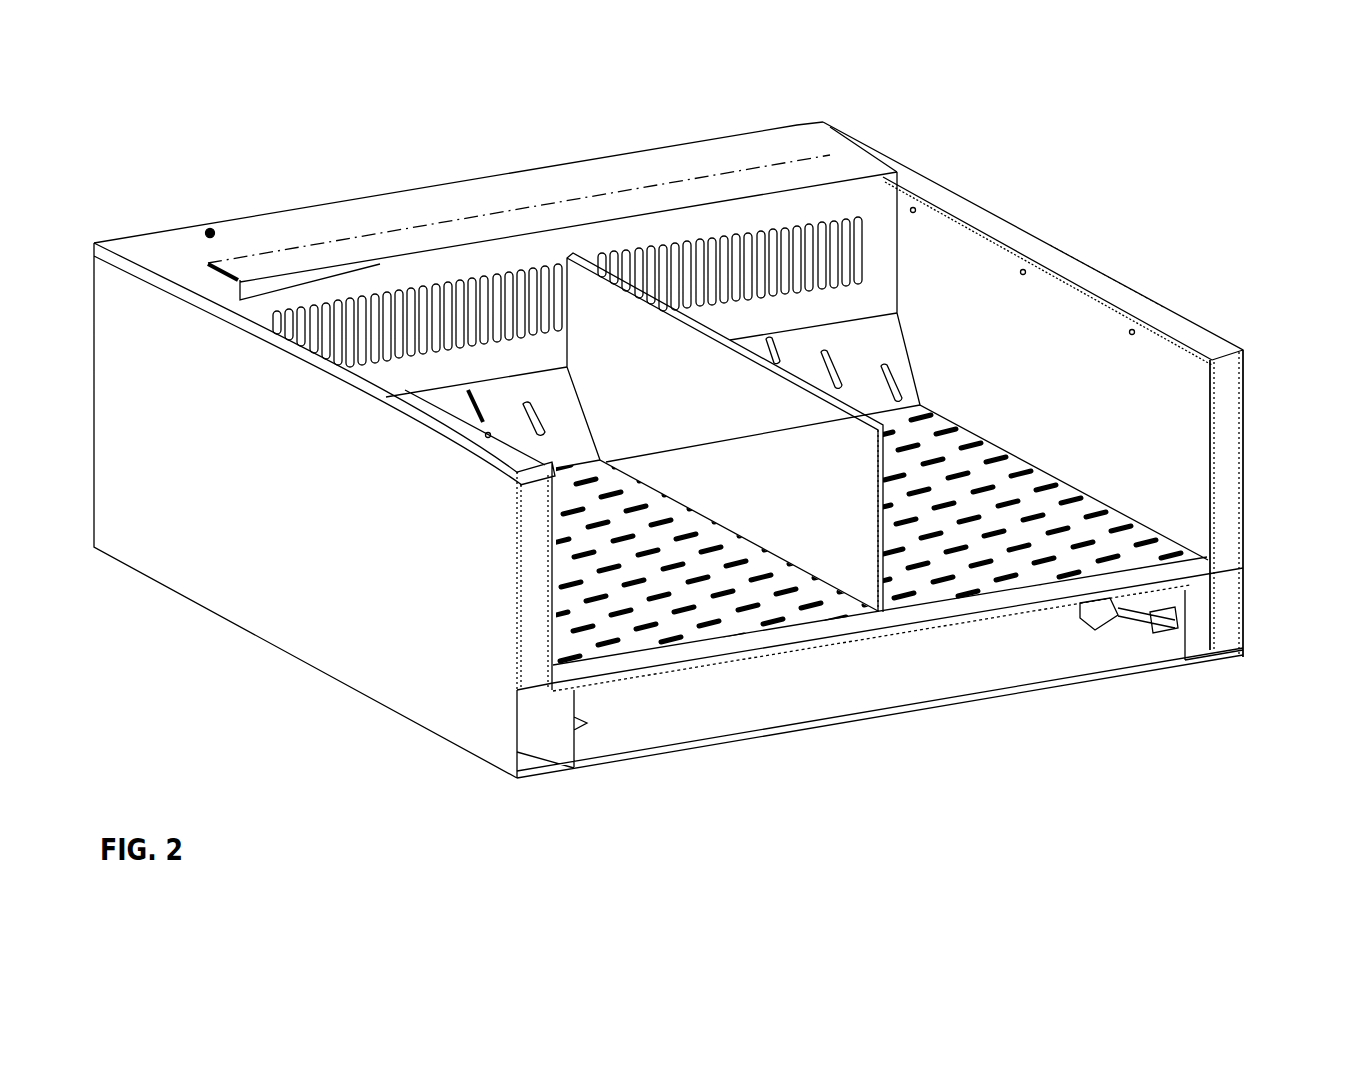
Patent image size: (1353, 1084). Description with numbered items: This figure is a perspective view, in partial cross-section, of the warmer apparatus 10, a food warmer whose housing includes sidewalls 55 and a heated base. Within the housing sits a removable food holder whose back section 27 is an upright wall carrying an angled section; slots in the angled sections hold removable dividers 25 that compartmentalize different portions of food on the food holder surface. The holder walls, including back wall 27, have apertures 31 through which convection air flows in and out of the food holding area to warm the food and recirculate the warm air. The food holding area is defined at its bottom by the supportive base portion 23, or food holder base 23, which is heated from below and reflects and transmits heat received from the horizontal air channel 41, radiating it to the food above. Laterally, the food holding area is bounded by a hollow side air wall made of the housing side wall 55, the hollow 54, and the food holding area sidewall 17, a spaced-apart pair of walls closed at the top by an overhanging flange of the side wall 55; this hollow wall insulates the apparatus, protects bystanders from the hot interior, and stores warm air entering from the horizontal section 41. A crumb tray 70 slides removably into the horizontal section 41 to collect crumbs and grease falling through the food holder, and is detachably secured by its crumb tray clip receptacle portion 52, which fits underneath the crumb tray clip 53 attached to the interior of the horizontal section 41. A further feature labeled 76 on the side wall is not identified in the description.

The warmer apparatus 10 is at (231, 186).
The food holding area sidewall 17 is at (1053, 337).
The food holder base 23 is at (975, 608).
The removable divider 25 is at (628, 346).
The food holder back wall 27 is at (877, 198).
The apertures 31 is at (458, 326).
The horizontal section of air channel 41 is at (818, 700).
The crumb tray clip receptacle portion 52 is at (1091, 609).
The crumb tray clip 53 is at (1158, 620).
The hollow 54 is at (532, 588).
The housing side wall 55 is at (290, 489).
The crumb tray 70 is at (901, 667).
The top flange of side wall 76 is at (1160, 320).